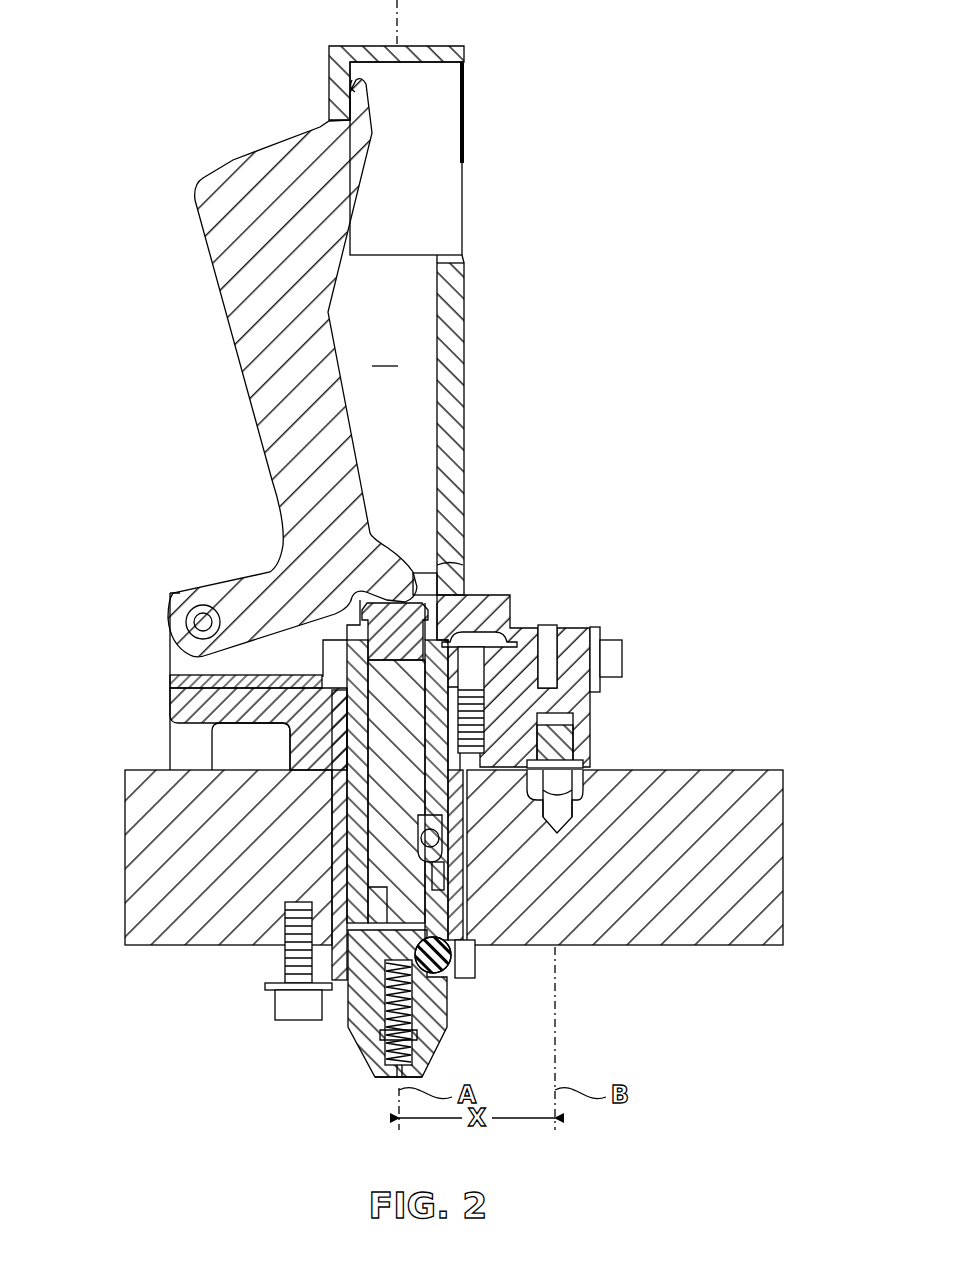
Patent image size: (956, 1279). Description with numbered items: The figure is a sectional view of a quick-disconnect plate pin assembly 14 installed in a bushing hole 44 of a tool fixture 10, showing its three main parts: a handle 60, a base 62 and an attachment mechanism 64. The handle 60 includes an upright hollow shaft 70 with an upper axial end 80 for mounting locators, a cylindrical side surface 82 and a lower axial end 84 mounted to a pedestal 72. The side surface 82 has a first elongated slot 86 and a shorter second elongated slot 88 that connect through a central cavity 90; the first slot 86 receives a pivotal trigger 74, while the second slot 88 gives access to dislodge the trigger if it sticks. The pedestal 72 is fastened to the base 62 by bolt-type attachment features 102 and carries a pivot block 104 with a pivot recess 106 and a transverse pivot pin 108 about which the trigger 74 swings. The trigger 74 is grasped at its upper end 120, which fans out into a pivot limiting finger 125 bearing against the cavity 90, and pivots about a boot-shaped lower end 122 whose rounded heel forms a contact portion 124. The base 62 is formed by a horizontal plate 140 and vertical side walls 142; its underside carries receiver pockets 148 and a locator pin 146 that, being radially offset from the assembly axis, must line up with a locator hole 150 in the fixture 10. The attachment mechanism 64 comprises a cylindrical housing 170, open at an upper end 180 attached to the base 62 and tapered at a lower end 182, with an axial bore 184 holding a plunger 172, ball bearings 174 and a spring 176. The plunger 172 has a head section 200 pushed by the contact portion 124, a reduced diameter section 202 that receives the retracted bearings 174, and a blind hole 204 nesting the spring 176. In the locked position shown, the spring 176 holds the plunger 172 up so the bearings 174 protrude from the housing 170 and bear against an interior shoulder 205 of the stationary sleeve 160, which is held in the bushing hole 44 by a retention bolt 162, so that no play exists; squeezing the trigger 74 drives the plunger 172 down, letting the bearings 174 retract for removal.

The tool fixture 10 is at (752, 865).
The plate pin assembly 14 is at (645, 196).
The bushing hole 44 is at (440, 953).
The handle 60 is at (240, 368).
The base 62 is at (632, 690).
The attachment mechanism 64 is at (382, 1022).
The shaft 70 is at (496, 425).
The pedestal 72 is at (495, 610).
The trigger 74 is at (268, 393).
The upper axial end 80 is at (375, 46).
The cylindrical side surface 82 is at (462, 283).
The lower axial end 84 is at (460, 592).
The first elongated slot 86 is at (340, 112).
The second elongated slot 88 is at (464, 200).
The central cavity 90 is at (384, 354).
The attachment features 102 is at (575, 648).
The pivot block 104 is at (182, 595).
The pivot recess 106 is at (178, 665).
The pivot pin 108 is at (203, 620).
The upper end 120 is at (245, 218).
The lower end 122 is at (263, 605).
The contact portion 124 is at (447, 552).
The pivot limiting finger 125 is at (352, 88).
The horizontal plate 140 is at (195, 703).
The vertical side walls 142 is at (573, 640).
The locator pin 146 is at (565, 748).
The receiver bushings or pockets 148 is at (195, 745).
The locator hole 150 is at (565, 805).
The bushing or sleeve 160 is at (337, 837).
The retention bolt 162 is at (280, 928).
The housing 170 is at (437, 1010).
The plunger 172 is at (343, 752).
The ball bearings 174 is at (468, 960).
The spring 176 is at (420, 1055).
The upper end 180 is at (352, 632).
The lower end 182 is at (363, 1058).
The axial bore 184 is at (432, 845).
The head section 200 is at (458, 605).
The reduced diameter section 202 is at (462, 887).
The blind hole 204 is at (352, 985).
The interior shoulder 205 is at (278, 973).